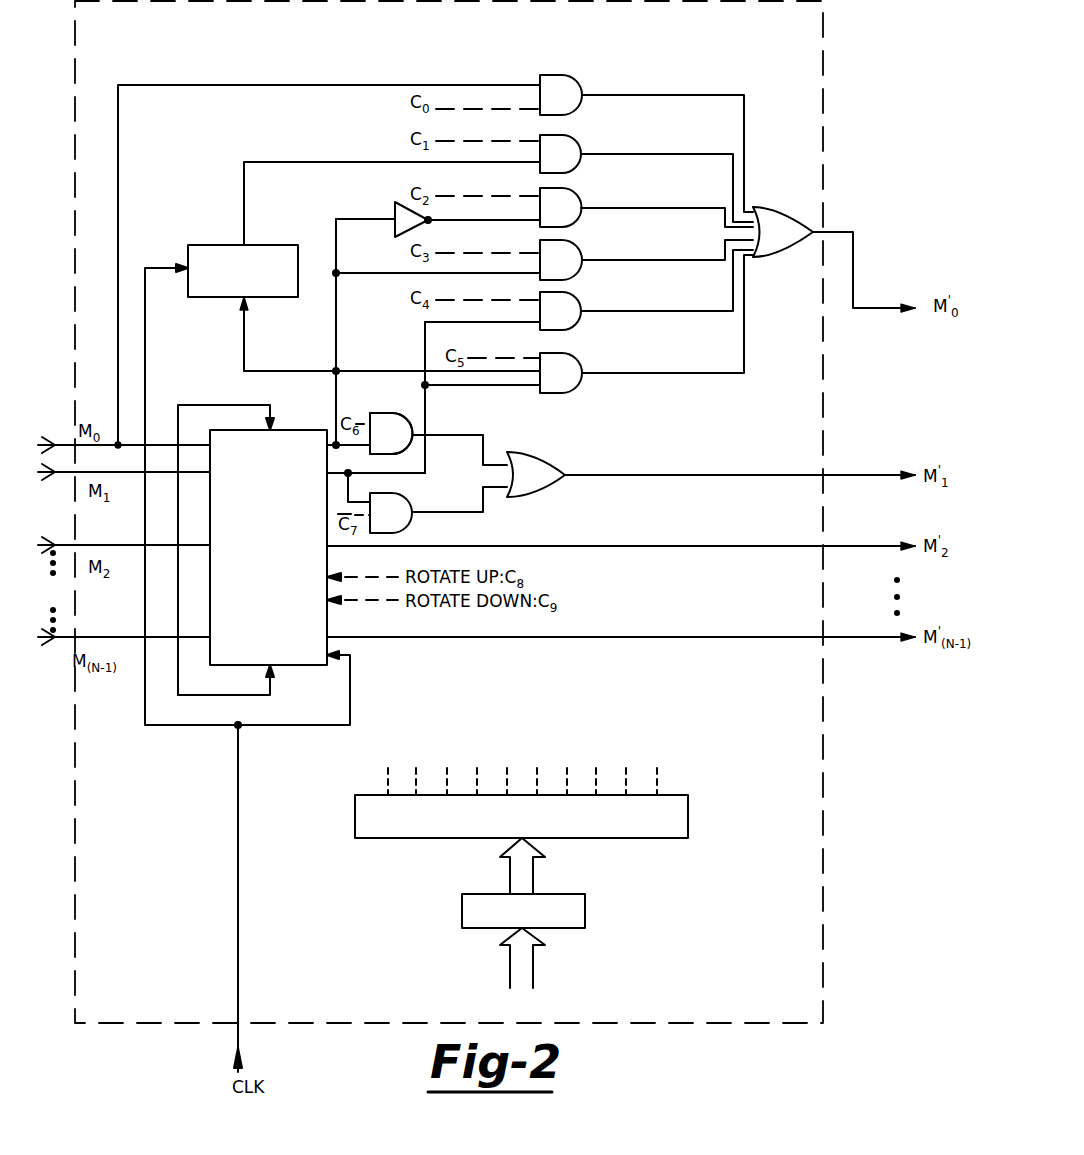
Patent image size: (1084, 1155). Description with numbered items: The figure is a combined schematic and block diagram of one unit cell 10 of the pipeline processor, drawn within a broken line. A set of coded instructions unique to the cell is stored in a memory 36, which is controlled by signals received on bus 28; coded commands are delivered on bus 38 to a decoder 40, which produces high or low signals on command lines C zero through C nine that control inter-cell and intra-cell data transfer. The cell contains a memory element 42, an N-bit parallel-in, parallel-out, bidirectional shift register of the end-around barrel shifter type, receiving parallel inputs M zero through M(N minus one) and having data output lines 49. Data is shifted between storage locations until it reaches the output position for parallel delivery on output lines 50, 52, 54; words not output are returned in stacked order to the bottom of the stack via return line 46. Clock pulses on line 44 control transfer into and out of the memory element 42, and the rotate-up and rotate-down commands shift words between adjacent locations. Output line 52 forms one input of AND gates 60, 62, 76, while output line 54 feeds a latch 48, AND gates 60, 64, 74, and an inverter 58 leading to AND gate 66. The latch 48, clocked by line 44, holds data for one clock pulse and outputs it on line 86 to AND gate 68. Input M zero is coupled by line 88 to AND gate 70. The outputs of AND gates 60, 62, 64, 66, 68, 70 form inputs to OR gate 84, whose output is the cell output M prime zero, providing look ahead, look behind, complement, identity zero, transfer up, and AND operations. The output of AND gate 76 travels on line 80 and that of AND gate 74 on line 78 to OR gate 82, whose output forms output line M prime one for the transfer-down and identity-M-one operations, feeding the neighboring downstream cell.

The unit cell 10 is at (449, 540).
The bus 28 is at (527, 973).
The memory 36 is at (585, 913).
The bus 38 is at (535, 880).
The decoder 40 is at (688, 815).
The memory element 42 is at (272, 615).
The clock line 44 is at (238, 795).
The return line 46 is at (177, 503).
The latch 48 is at (267, 245).
The data output lines 49 is at (647, 637).
The output line 50 is at (642, 546).
The data output line 52 is at (403, 478).
The output line 54 is at (340, 436).
The inverter 58 is at (395, 212).
The AND gate 60 is at (646, 324).
The AND gate 62 is at (646, 290).
The AND gate 64 is at (646, 258).
The AND gate 66 is at (646, 205).
The AND gate 68 is at (646, 177).
The AND gate 70 is at (646, 142).
The AND gate 74 is at (391, 433).
The AND gate 76 is at (391, 513).
The line 78 is at (497, 453).
The line 80 is at (487, 510).
The OR gate 82 is at (562, 452).
The OR gate 84 is at (834, 241).
The line 86 is at (392, 183).
The line 88 is at (193, 85).